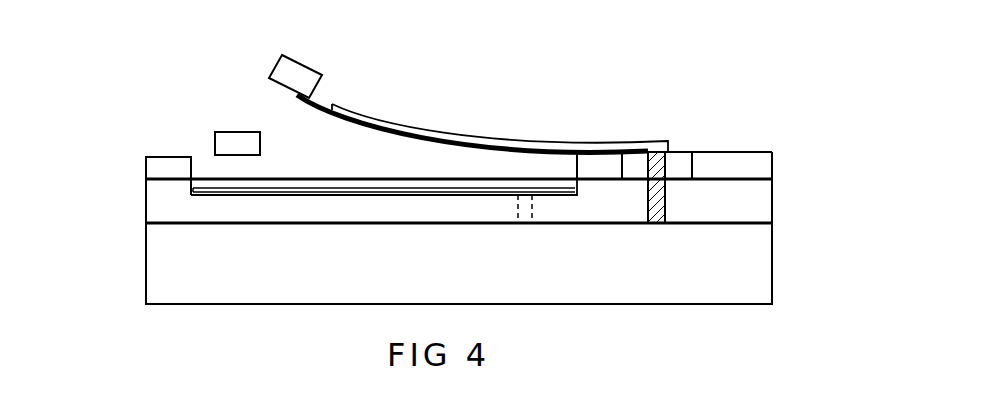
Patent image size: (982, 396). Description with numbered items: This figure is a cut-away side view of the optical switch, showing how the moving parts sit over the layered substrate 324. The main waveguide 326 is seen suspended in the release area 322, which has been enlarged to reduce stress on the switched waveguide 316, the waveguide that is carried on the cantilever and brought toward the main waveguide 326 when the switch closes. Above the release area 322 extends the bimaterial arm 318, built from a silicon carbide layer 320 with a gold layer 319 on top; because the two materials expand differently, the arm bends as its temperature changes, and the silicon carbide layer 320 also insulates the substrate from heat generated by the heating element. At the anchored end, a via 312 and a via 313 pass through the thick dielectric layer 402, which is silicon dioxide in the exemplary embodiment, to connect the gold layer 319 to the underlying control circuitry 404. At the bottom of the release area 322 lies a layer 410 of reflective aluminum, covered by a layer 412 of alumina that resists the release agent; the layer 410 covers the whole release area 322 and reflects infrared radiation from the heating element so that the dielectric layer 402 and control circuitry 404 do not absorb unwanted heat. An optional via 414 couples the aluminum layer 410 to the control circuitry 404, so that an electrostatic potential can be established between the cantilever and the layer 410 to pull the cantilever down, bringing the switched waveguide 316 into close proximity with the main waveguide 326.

The via 312 is at (677, 165).
The via 313 is at (660, 203).
The switched waveguide 316 is at (300, 64).
The bimaterial arm 318 is at (437, 111).
The gold layer 319 is at (493, 133).
The silicon carbide layer 320 is at (320, 102).
The release area 322 is at (202, 154).
The substrate 324 is at (738, 163).
The main waveguide 326 is at (231, 132).
The dielectric layer 402 is at (765, 200).
The underlying control circuitry 404 is at (767, 272).
The reflective layer 410 is at (242, 190).
The release-agent-resistant layer 412 is at (305, 183).
The via 414 is at (520, 208).